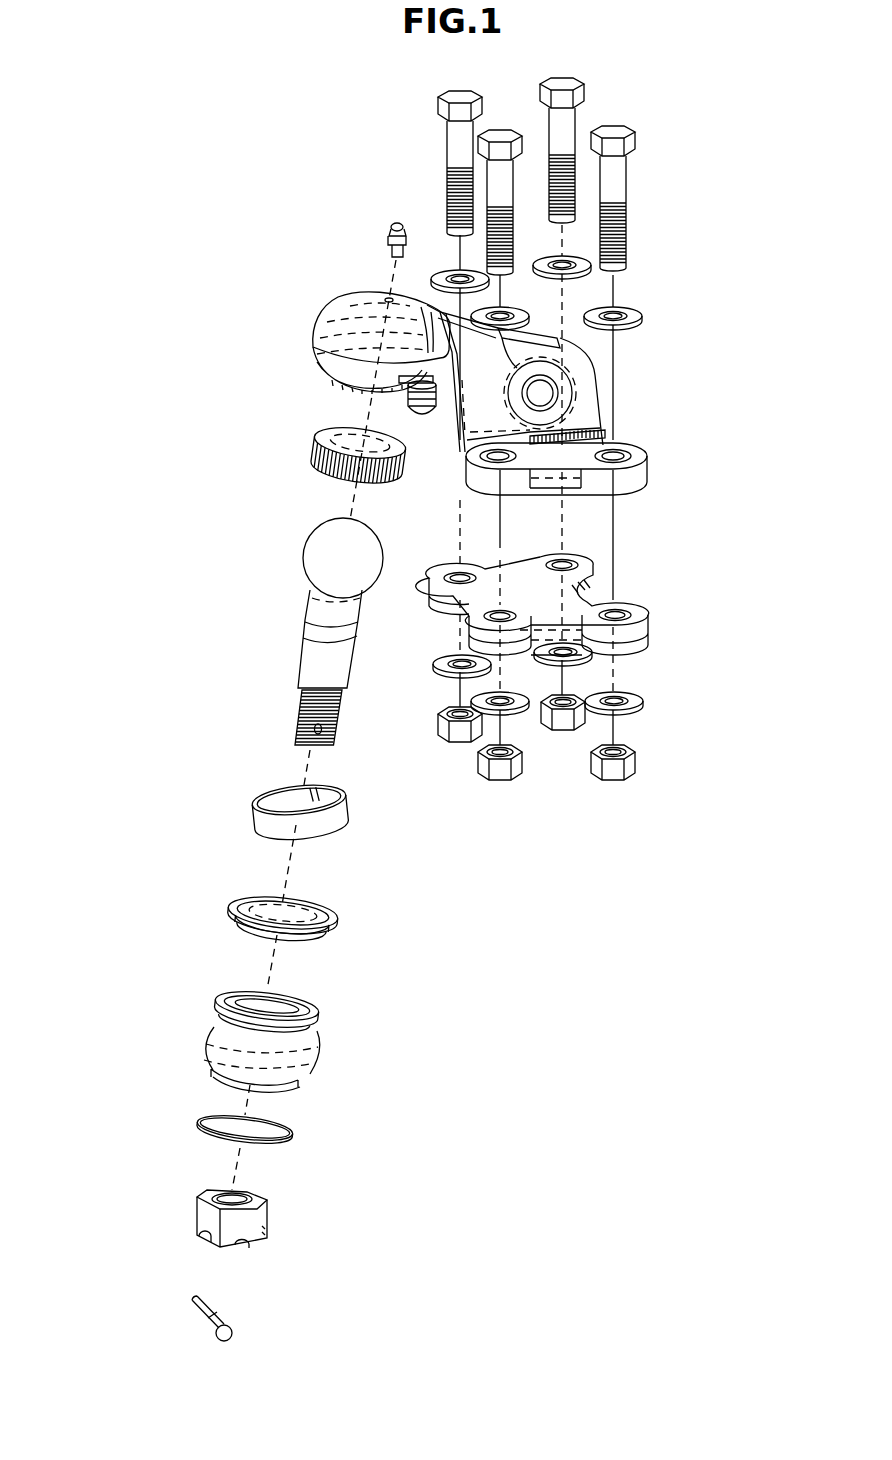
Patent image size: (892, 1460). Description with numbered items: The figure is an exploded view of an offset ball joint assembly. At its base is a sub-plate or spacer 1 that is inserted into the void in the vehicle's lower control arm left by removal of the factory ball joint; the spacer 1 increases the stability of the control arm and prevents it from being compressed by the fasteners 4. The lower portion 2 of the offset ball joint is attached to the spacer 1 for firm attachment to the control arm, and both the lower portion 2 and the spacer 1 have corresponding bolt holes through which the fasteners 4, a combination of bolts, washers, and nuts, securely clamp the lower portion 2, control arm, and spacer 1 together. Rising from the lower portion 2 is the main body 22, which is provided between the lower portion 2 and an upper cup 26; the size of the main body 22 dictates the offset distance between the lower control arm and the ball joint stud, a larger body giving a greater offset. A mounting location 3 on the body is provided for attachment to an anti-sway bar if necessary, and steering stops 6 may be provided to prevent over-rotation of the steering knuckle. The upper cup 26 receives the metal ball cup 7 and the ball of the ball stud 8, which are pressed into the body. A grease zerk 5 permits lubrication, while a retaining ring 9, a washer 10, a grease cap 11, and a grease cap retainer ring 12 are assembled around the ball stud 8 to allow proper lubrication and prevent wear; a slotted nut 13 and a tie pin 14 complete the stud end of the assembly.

The spacer 1 is at (540, 595).
The lower portion 2 is at (655, 455).
The mounting location 3 is at (564, 386).
The fasteners 4 is at (639, 306).
The grease zerk 5 is at (380, 233).
The steering stops 6 is at (322, 357).
The metal ball cup 7 is at (315, 439).
The ball stud 8 is at (325, 557).
The retaining ring 9 is at (266, 809).
The washer 10 is at (217, 896).
The grease cap 11 is at (215, 1022).
The grease cap retainer ring 12 is at (196, 1124).
The slotted nut 13 is at (205, 1213).
The tie pin 14 is at (184, 1297).
The main body 22 is at (568, 358).
The upper cup 26 is at (335, 313).